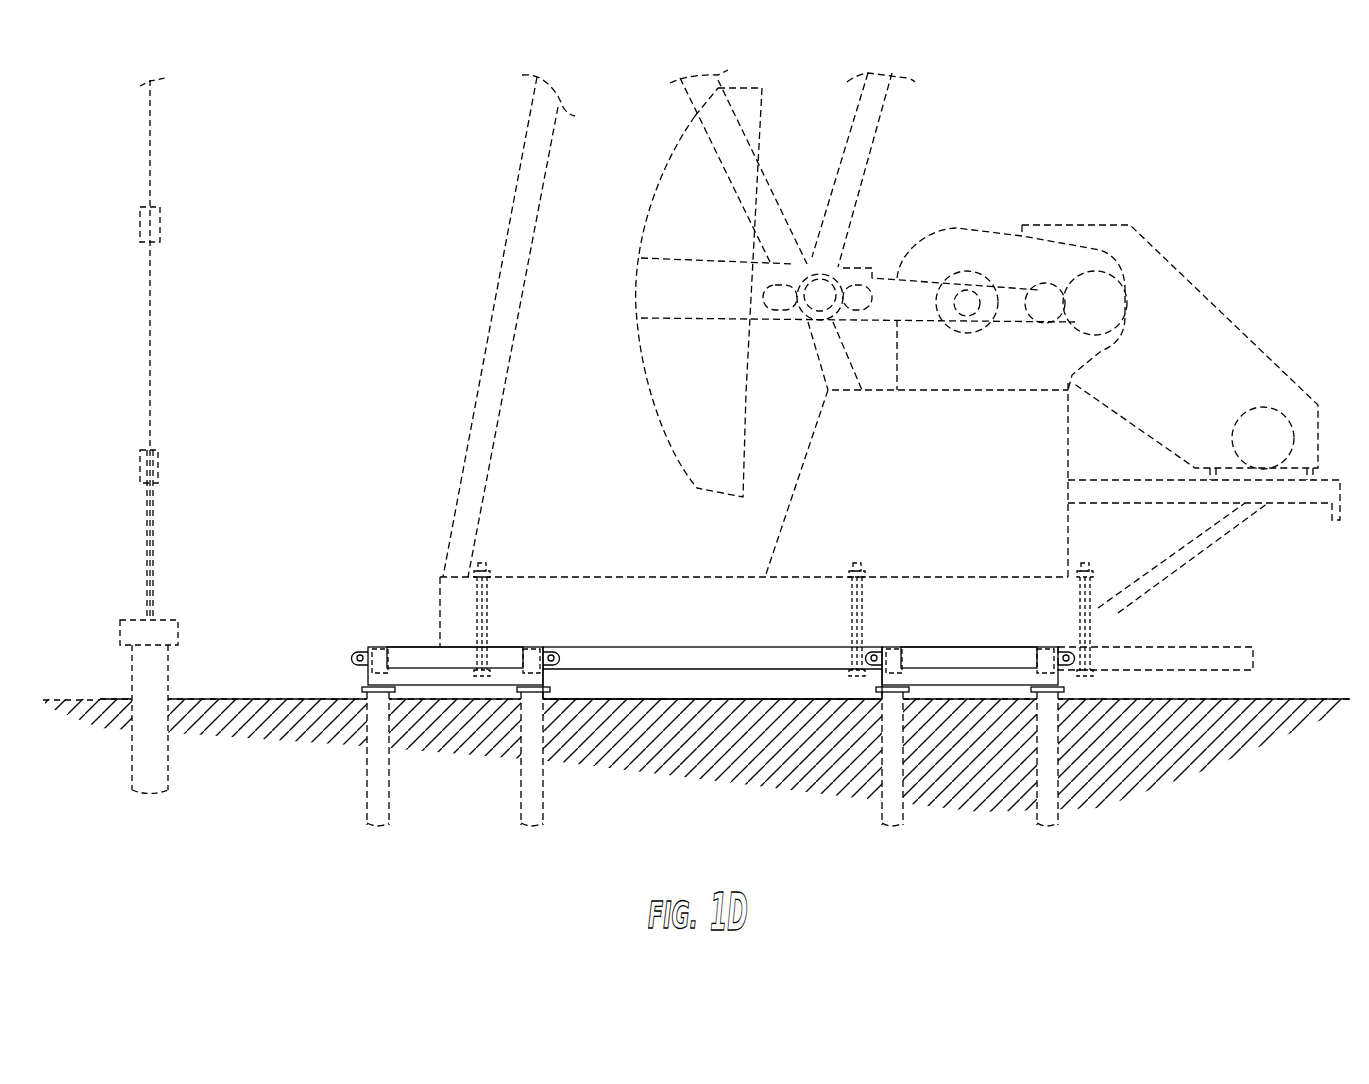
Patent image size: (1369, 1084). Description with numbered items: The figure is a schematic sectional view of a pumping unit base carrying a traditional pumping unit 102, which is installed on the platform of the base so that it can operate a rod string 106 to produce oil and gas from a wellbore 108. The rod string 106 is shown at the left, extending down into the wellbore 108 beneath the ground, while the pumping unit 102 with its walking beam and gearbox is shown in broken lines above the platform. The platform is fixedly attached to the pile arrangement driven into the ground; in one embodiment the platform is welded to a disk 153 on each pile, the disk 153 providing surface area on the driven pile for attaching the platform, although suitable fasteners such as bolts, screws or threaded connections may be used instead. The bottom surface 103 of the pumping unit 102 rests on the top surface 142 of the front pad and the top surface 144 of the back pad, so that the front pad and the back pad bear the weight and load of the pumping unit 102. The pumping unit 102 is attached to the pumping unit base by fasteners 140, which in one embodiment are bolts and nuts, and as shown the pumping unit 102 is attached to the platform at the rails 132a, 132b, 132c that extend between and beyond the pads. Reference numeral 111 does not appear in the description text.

The pumping unit 102 is at (950, 172).
The bottom surface 103 is at (650, 647).
The rod string 106 is at (150, 400).
The wellbore 108 is at (135, 770).
The piles 111 is at (375, 782).
The rail 132a is at (750, 657).
The rail 132b is at (432, 657).
The rail 132c is at (1227, 657).
The fasteners 140 is at (482, 562).
The top surface of the front pad 142 is at (397, 640).
The top surface of the back pad 144 is at (1025, 646).
The disk 153 is at (517, 687).